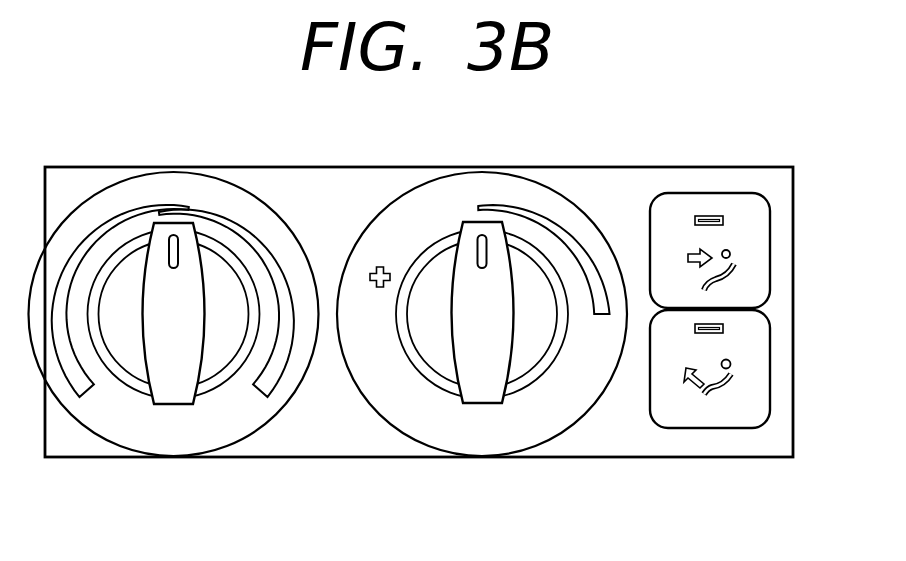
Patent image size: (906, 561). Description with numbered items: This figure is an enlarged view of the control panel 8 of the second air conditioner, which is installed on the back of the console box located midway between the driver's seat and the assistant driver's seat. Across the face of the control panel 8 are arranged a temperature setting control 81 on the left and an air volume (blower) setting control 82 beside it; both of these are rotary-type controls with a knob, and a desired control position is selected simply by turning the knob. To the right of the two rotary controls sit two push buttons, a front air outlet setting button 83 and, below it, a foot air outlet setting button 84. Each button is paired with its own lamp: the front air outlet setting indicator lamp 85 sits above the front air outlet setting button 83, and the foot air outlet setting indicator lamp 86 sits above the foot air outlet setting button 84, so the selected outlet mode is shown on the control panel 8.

The control panel 8 is at (630, 158).
The temperature setting control 81 is at (163, 332).
The air volume setting control 82 is at (473, 332).
The front air outlet setting button 83 is at (736, 277).
The foot air outlet setting button 84 is at (736, 384).
The front air outlet setting indicator lamp 85 is at (723, 221).
The foot air outlet setting indicator lamp 86 is at (723, 328).